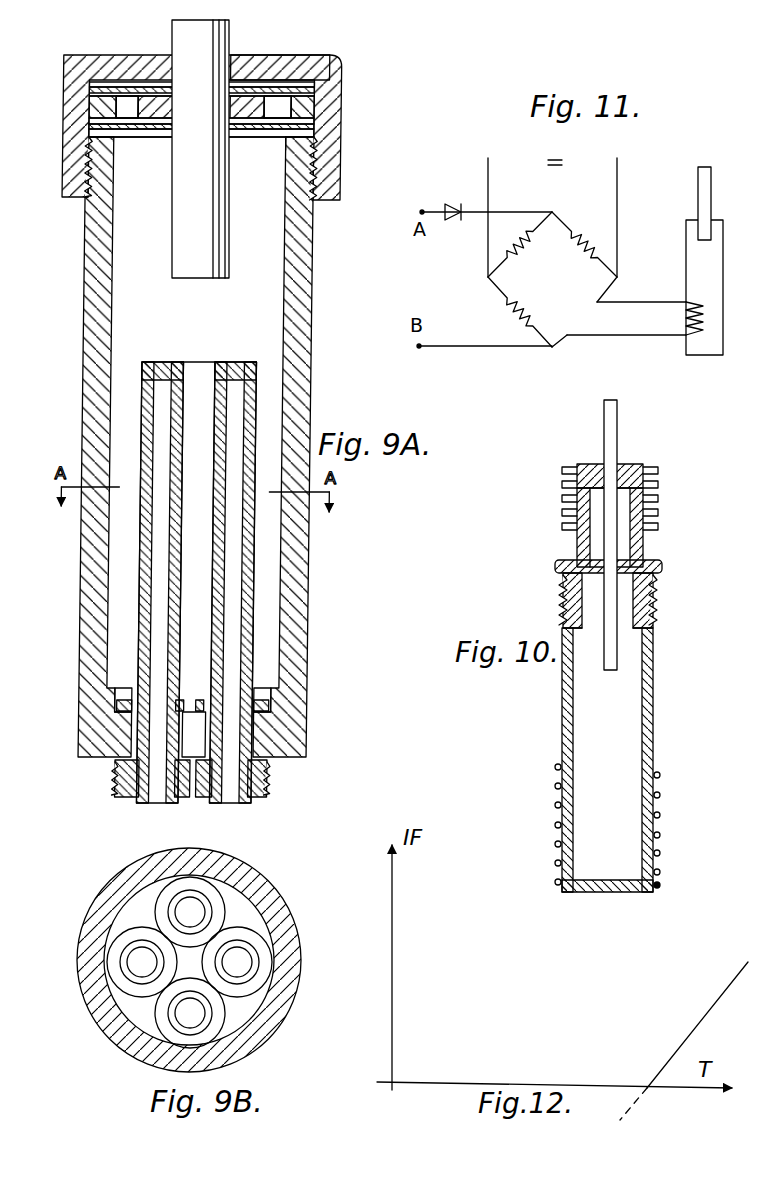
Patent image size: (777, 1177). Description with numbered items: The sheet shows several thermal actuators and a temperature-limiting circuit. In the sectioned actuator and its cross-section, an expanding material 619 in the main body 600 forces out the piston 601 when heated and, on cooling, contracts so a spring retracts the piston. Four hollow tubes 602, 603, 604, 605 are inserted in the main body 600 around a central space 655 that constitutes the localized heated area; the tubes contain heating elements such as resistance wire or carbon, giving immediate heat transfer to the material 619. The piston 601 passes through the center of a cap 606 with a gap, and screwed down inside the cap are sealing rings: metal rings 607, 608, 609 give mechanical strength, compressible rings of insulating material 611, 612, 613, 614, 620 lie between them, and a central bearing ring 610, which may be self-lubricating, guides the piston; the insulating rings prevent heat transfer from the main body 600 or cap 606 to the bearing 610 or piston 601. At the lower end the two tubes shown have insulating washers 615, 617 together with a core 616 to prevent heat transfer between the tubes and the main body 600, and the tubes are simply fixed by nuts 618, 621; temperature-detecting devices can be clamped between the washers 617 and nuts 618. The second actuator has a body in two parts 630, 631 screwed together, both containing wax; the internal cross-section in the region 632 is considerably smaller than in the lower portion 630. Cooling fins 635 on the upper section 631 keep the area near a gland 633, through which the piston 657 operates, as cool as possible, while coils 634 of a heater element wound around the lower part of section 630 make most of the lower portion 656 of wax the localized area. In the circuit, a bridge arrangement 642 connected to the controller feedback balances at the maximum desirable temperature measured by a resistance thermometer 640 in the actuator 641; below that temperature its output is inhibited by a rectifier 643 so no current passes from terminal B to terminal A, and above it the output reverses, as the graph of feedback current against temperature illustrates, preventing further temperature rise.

In FIG. 9A, the main body 600 is at (100, 322).
In FIG. 9B, the main body 600 is at (290, 970).
In FIG. 9A, the piston 601 is at (183, 236).
In FIG. 9B, the hollow tube 602 is at (217, 896).
In FIG. 9B, the hollow tube 603 is at (250, 935).
In FIG. 9B, the hollow tube 604 is at (135, 987).
In FIG. 9B, the hollow tube 605 is at (217, 1022).
In FIG. 9A, the cap 606 is at (75, 183).
In FIG. 9A, the metal ring 607 is at (88, 88).
In FIG. 9A, the metal ring 608 is at (93, 109).
In FIG. 9A, the metal ring 609 is at (88, 136).
In FIG. 9A, the central bearing ring 610 is at (155, 114).
In FIG. 9A, the ring of insulating material 611 is at (275, 62).
In FIG. 9A, the ring of insulating material 612 is at (318, 100).
In FIG. 9A, the ring of insulating material 613 is at (272, 116).
In FIG. 9A, the ring of insulating material 614 is at (318, 128).
In FIG. 9A, the insulating washer 615 is at (122, 745).
In FIG. 9A, the core 616 is at (124, 715).
In FIG. 9A, the insulating washer 617 is at (126, 798).
In FIG. 9A, the nut 618 is at (188, 797).
In FIG. 9A, the expanding material 619 is at (198, 249).
In FIG. 9A, the ring of insulating material 620 is at (315, 143).
In FIG. 9A, the nut 621 is at (281, 791).
In FIG. 9A, the central space 655 is at (204, 570).
In FIG. 10, the lower body part 630 is at (653, 692).
In FIG. 10, the upper body part 631 is at (642, 545).
In FIG. 10, the region of smaller cross-section 632 is at (597, 534).
In FIG. 10, the gland 633 is at (620, 463).
In FIG. 10, the heater coils 634 is at (658, 795).
In FIG. 10, the cooling fins 635 is at (575, 481).
In FIG. 10, the lower portion of wax 656 is at (597, 739).
In FIG. 10, the piston 657 is at (618, 430).
In FIG. 11, the resistance thermometer 640 is at (686, 319).
In FIG. 11, the actuator 641 is at (686, 262).
In FIG. 11, the bridge arrangement 642 is at (552, 252).
In FIG. 11, the rectifier 643 is at (453, 204).